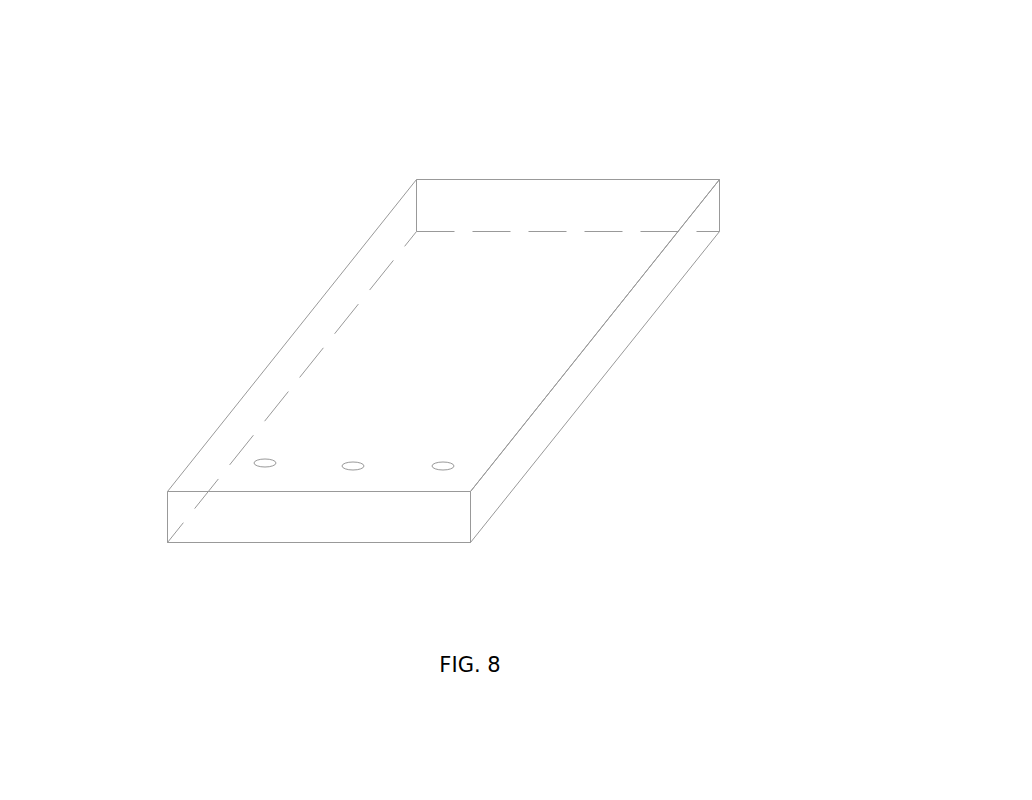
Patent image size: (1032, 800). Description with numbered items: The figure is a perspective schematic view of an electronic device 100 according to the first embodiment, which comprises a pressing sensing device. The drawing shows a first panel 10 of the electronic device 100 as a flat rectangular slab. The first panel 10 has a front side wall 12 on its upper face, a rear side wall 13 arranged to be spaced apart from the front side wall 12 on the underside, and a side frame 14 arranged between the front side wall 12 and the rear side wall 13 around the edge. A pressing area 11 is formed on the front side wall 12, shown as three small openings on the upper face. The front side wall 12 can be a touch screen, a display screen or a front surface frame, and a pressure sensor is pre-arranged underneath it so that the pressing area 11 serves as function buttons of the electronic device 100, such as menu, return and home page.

The electronic device 100 is at (566, 46).
The first panel 10 is at (607, 352).
The pressing area 11 is at (268, 459).
The front side wall 12 is at (473, 400).
The rear side wall 13 is at (372, 543).
The side frame 14 is at (525, 457).